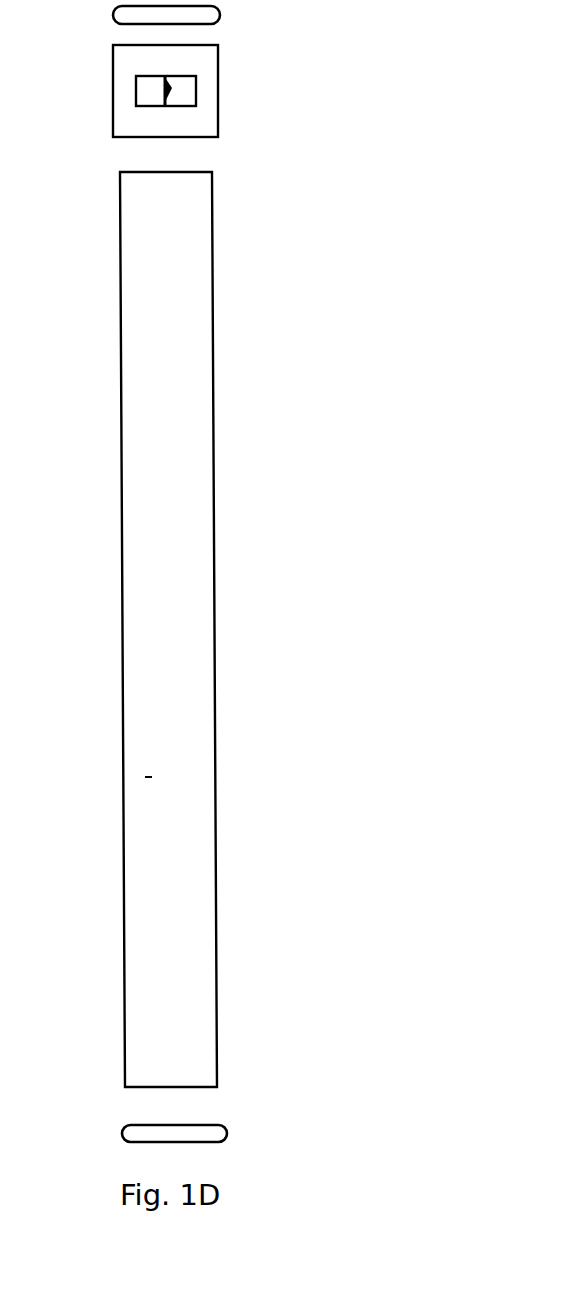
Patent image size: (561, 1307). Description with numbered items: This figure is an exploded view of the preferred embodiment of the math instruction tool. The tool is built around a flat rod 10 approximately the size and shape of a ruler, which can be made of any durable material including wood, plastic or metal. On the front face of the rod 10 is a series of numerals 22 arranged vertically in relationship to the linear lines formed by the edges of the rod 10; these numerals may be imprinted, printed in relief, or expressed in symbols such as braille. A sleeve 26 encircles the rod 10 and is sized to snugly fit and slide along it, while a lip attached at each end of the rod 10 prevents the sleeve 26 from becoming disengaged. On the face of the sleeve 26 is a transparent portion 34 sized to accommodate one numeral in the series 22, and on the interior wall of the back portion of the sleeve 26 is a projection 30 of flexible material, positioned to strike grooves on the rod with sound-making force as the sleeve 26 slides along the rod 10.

The flat rod 10 is at (123, 664).
The series of numerals 22 is at (150, 773).
The sleeve 26 is at (113, 50).
The projection 30 is at (168, 90).
The transparent portion 34 is at (152, 100).